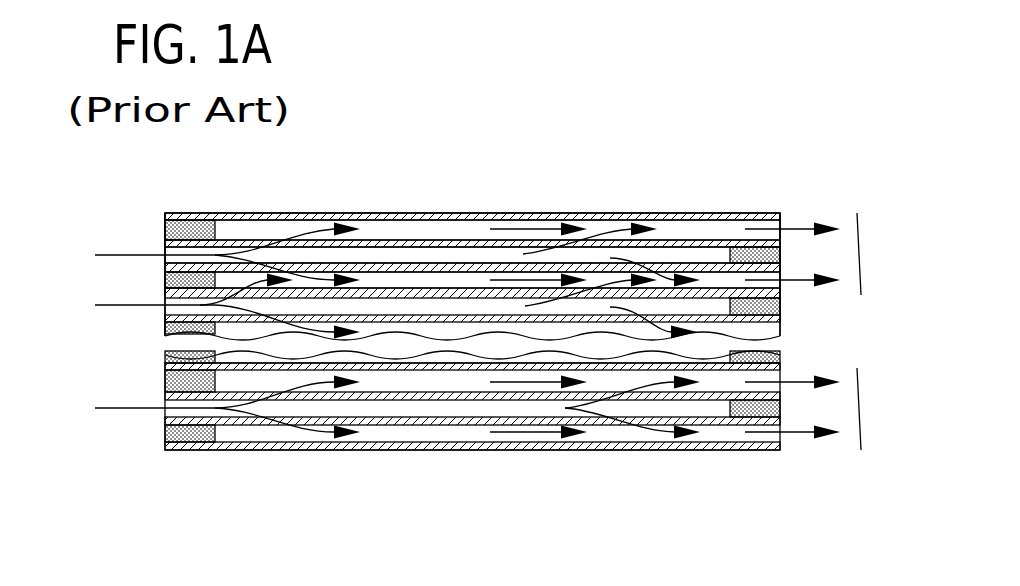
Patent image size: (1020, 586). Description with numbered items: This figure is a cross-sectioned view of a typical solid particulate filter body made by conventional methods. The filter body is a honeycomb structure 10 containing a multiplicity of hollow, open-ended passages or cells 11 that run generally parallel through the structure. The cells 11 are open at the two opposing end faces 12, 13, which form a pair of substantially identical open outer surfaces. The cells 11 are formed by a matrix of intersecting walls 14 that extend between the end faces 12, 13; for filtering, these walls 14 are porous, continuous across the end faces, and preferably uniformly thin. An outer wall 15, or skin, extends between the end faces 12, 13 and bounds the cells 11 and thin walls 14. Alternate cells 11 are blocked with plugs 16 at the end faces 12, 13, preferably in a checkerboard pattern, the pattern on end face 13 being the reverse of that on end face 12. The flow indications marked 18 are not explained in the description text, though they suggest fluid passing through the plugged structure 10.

The honeycomb structure 10 is at (275, 450).
The cells 11 is at (480, 275).
The end face 12 is at (163, 215).
The end face 13 is at (783, 214).
The walls 14 is at (435, 267).
The outer wall 15 is at (657, 213).
The plugs 16 is at (187, 333).
The fluid flow streams 18 is at (80, 297).